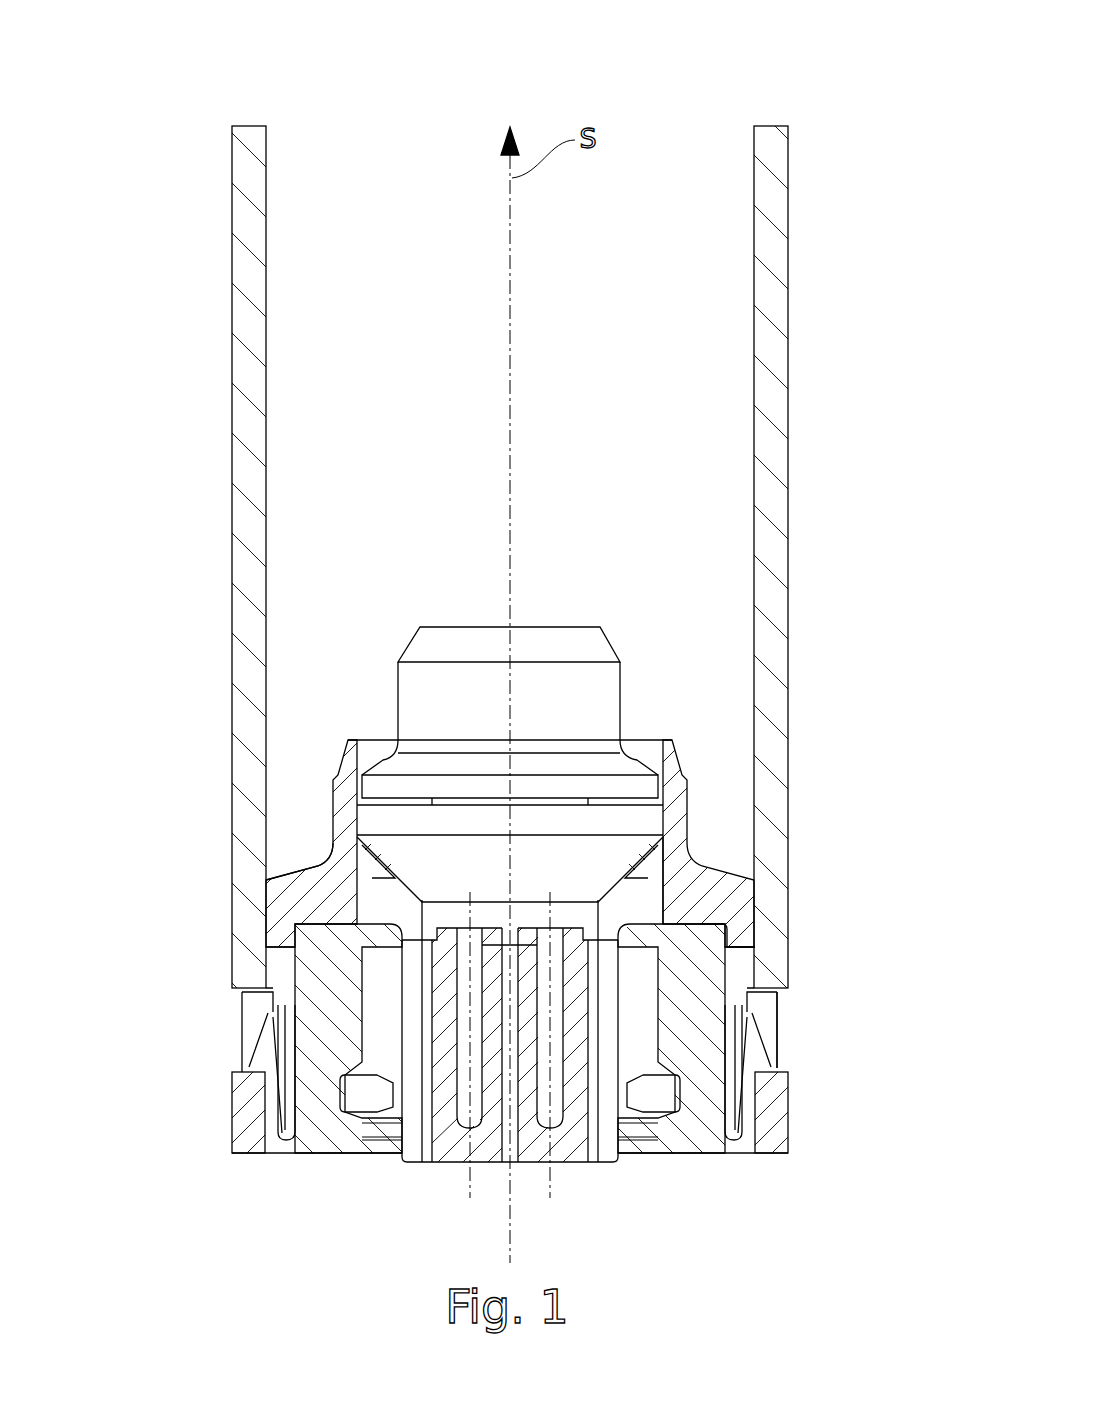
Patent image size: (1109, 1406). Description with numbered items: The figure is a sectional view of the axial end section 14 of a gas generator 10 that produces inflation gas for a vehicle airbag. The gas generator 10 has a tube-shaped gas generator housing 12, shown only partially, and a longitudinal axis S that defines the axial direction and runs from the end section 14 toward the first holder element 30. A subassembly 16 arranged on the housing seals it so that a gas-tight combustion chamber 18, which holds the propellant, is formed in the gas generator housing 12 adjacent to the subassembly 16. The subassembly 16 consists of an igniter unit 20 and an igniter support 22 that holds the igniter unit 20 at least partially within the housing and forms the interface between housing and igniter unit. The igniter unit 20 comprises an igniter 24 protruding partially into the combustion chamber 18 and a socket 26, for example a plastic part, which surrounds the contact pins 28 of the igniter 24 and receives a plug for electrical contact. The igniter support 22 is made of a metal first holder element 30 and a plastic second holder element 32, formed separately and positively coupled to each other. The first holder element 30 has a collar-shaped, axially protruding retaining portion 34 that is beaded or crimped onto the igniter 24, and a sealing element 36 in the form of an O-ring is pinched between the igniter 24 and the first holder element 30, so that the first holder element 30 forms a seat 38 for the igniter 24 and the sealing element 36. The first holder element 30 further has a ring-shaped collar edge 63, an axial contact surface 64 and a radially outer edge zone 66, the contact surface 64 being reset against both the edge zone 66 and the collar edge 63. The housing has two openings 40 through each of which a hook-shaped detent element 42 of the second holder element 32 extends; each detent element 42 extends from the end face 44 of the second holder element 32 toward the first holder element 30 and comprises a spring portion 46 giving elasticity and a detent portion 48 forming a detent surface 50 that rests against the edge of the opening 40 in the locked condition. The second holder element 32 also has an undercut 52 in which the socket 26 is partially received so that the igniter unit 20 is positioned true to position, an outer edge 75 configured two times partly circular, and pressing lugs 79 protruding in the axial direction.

The gas generator 10 is at (552, 496).
The gas generator housing 12 is at (775, 247).
The axial end section 14 is at (148, 1147).
The subassembly 16 is at (199, 1211).
The combustion chamber 18 is at (738, 298).
The igniter unit 20 is at (424, 664).
The igniter support 22 is at (714, 826).
The igniter 24 is at (415, 695).
The socket 26 is at (499, 1079).
The contact pins 28 is at (465, 1132).
The first holder element 30 is at (340, 855).
The second holder element 32 is at (333, 1140).
The retaining portion 34 is at (352, 757).
The sealing element 36 is at (672, 863).
The seat 38 is at (648, 740).
The openings 40 is at (230, 1032).
The detent elements 42 is at (249, 1066).
The end face 44 is at (700, 1173).
The spring portion 46 is at (270, 1153).
The detent portion 48 is at (265, 1030).
The detent surface 50 is at (267, 1113).
The undercut 52 is at (663, 1072).
The collar edge 63 is at (278, 912).
The axial contact surface 64 is at (790, 1049).
The edge zone 66 is at (400, 898).
The outer edge 75 is at (745, 933).
The pressing lugs 79 is at (680, 903).